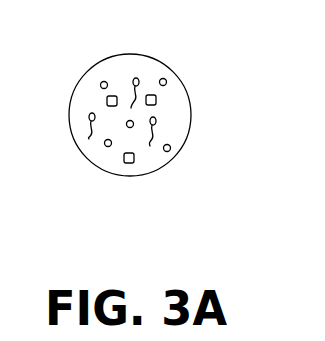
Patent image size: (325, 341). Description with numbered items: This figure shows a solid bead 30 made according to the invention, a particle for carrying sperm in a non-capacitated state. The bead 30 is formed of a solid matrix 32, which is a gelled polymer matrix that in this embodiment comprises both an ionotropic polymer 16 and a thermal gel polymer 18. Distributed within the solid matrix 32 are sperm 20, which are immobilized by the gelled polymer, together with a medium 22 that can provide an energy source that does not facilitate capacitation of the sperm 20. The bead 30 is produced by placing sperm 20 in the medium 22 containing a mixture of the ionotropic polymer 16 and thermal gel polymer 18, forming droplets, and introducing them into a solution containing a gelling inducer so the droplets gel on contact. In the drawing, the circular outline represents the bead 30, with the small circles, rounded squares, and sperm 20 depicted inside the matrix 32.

The solid bead 30 is at (183, 63).
The medium 22 is at (173, 105).
The sperm 20 is at (156, 123).
The ionotropic polymer 16 is at (169, 151).
The thermal gel polymer 18 is at (128, 165).
The solid matrix 32 is at (151, 162).